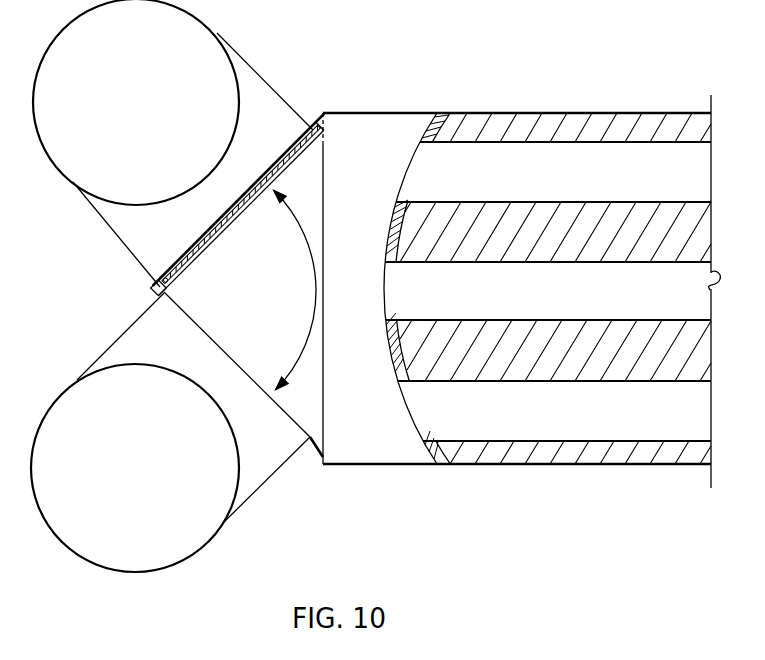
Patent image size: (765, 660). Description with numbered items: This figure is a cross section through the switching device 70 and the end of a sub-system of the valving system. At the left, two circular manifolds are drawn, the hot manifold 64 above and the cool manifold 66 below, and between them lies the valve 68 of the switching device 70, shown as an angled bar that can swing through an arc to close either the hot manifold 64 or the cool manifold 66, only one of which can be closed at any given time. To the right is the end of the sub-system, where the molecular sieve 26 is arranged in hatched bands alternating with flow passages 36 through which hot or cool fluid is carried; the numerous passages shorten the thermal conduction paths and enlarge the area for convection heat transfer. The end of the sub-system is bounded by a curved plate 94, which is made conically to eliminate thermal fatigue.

The molecular sieve 26 is at (548, 291).
The flow passages 36 is at (548, 291).
The hot manifold 64 is at (173, 143).
The cool manifold 66 is at (170, 432).
The valve 68 is at (306, 146).
The switching device 70 is at (271, 289).
The plate 94 is at (436, 112).